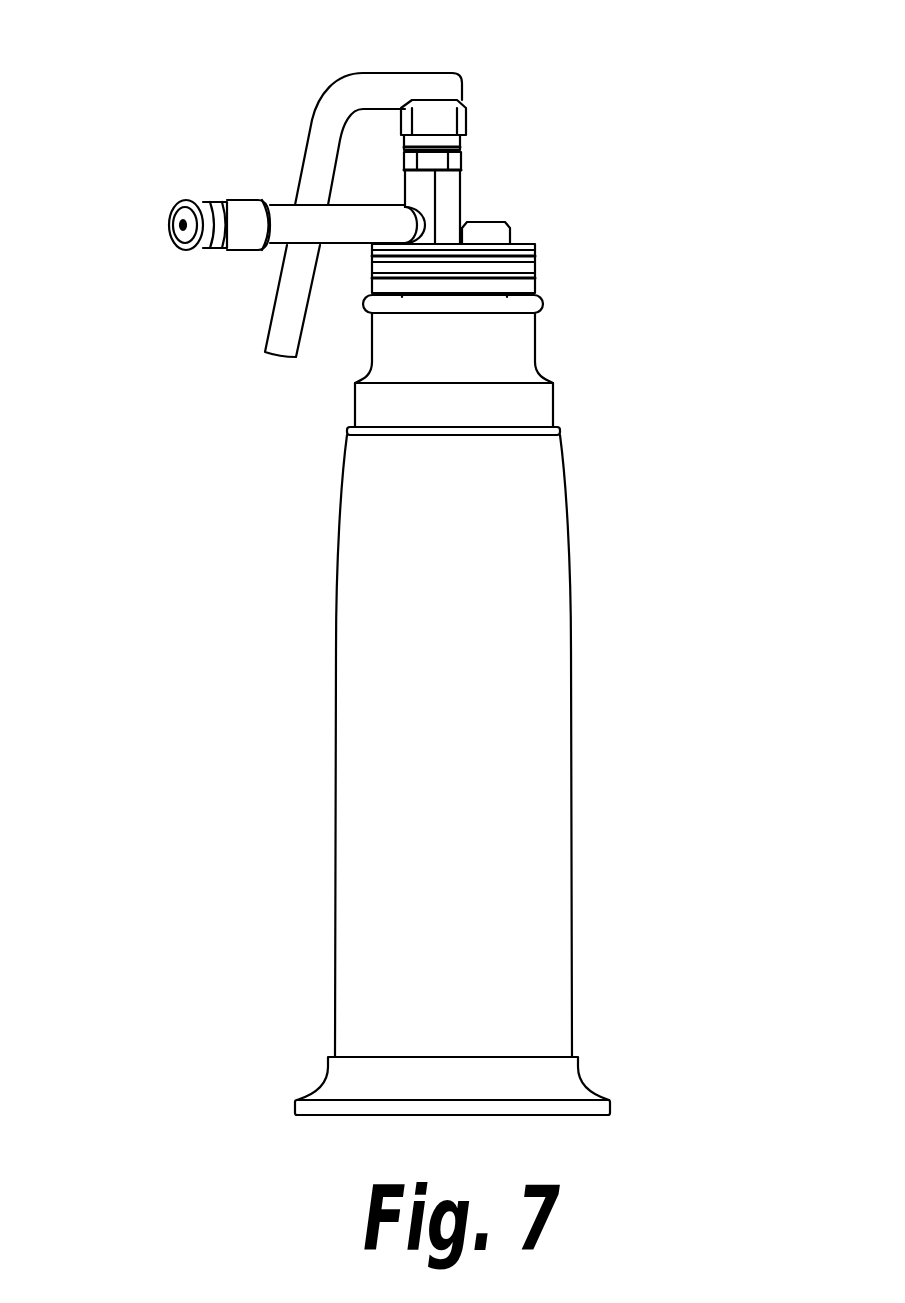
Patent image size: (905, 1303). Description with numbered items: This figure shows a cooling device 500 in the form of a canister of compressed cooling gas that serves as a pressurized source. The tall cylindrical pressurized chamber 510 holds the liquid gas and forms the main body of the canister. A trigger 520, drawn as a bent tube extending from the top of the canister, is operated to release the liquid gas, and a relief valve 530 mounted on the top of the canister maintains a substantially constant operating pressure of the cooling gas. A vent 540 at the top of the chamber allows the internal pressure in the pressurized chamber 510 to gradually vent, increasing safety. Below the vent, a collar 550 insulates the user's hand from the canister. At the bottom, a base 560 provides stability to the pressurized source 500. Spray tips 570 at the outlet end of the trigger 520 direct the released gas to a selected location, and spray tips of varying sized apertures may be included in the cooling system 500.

The cooling device 500 is at (604, 67).
The pressurized chamber 510 is at (530, 718).
The trigger 520 is at (310, 156).
The relief valve 530 is at (512, 236).
The vent 540 is at (522, 266).
The collar 550 is at (504, 343).
The base 560 is at (572, 1086).
The spray tips 570 is at (232, 248).